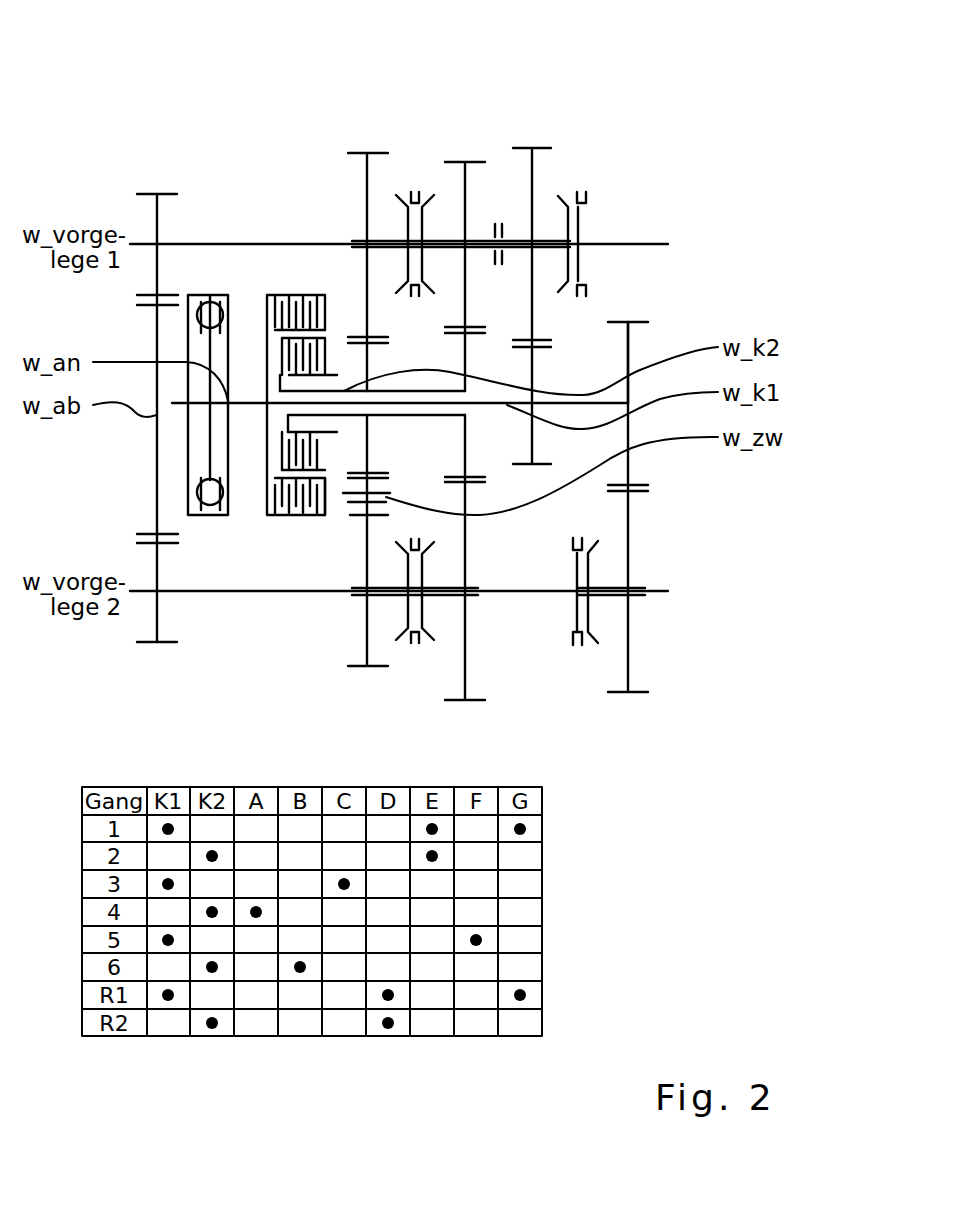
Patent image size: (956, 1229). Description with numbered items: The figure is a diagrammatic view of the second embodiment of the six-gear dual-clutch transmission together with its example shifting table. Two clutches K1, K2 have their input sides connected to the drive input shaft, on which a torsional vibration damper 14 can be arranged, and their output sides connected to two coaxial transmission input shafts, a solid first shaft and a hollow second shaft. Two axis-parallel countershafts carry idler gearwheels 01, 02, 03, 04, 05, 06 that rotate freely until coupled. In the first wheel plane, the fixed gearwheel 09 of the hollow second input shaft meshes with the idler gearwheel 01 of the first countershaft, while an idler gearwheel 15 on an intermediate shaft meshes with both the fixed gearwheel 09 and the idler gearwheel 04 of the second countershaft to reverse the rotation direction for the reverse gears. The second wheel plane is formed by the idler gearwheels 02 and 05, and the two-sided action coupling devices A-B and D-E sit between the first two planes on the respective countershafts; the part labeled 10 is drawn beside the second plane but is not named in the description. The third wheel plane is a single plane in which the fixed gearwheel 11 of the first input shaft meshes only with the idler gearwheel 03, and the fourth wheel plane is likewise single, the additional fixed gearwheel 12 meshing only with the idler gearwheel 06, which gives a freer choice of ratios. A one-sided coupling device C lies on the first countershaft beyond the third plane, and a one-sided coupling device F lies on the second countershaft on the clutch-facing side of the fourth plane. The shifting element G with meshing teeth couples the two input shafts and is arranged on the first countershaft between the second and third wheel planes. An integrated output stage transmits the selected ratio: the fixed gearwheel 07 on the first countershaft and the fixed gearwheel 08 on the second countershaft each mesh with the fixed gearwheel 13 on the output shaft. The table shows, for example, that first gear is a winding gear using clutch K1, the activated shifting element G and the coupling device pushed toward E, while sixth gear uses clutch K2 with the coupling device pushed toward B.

The idler gearwheel 01 is at (369, 153).
The idler gearwheel 02 is at (454, 162).
The idler gearwheel 03 is at (537, 148).
The idler gearwheel 04 is at (361, 667).
The idler gearwheel 05 is at (470, 701).
The idler gearwheel 06 is at (612, 693).
The fixed gearwheel 07 is at (158, 194).
The fixed gearwheel 08 is at (153, 643).
The fixed gearwheel 09 is at (367, 356).
The loose gearwheel / synchronizer plates of shift element 10 is at (485, 333).
The fixed gearwheel 11 is at (545, 345).
The fixed gearwheel 12 is at (628, 347).
The fixed gearwheel 13 is at (160, 322).
The torsional vibration damper 14 is at (223, 515).
The idler gearwheel 15 is at (350, 505).
The first clutch K1 is at (257, 307).
The second clutch K2 is at (257, 352).
The coupling device direction A is at (406, 188).
The coupling device direction B is at (415, 184).
The one-sided action coupling device C is at (582, 184).
The coupling device direction D is at (399, 651).
The coupling device direction E is at (415, 651).
The one-sided action coupling device F is at (578, 652).
The shifting element G is at (499, 228).